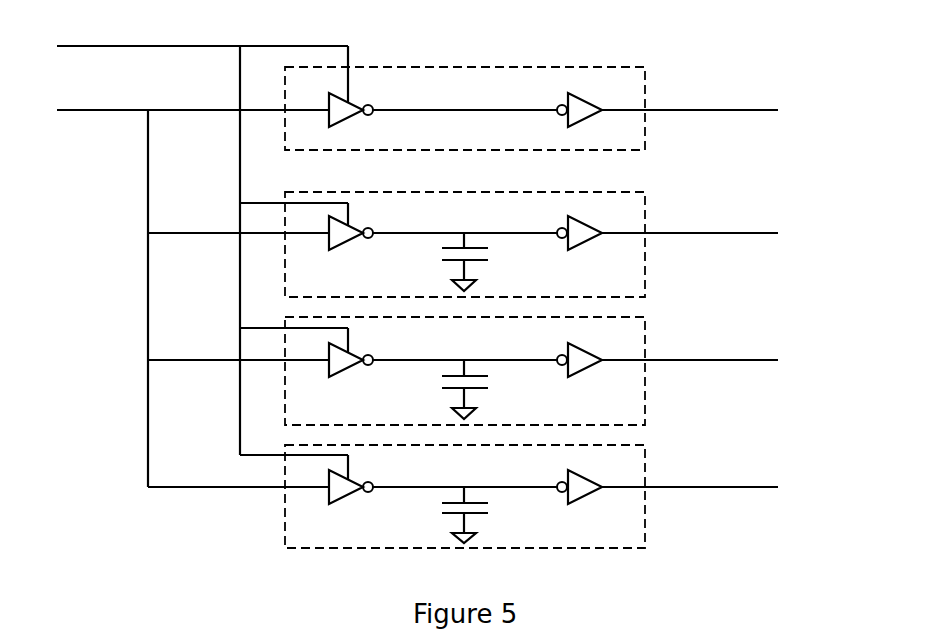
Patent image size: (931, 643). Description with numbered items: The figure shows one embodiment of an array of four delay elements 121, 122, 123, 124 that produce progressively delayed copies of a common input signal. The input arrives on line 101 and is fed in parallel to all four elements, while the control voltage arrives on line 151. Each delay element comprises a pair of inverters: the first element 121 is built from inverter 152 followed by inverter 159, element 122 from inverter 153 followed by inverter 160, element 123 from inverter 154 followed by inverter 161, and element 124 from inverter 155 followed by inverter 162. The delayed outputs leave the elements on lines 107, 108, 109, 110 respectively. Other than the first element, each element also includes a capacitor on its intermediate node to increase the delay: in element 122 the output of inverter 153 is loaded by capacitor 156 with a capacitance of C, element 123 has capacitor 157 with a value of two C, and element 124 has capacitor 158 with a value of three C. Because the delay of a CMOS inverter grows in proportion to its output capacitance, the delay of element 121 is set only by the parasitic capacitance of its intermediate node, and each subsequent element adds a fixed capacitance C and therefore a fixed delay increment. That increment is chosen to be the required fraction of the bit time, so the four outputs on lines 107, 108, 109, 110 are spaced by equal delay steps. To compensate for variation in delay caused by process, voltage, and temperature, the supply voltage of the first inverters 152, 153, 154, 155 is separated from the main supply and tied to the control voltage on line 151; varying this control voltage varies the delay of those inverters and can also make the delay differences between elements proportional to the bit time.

The line 151 is at (100, 60).
The input signal in 101 is at (88, 118).
The delay element 121 is at (487, 108).
The delay element 122 is at (487, 244).
The delay element 123 is at (487, 371).
The delay element 124 is at (487, 496).
The inverter 152 is at (352, 102).
The inverter 153 is at (352, 225).
The inverter 154 is at (352, 352).
The inverter 155 is at (352, 479).
The inverter 159 is at (580, 100).
The inverter 160 is at (580, 223).
The inverter 161 is at (580, 350).
The inverter 162 is at (580, 477).
The capacitor 156 is at (478, 262).
The capacitor 157 is at (480, 390).
The capacitor 158 is at (480, 516).
The output out1 107 is at (722, 118).
The output out2 108 is at (720, 241).
The output out3 109 is at (720, 368).
The output out4 110 is at (720, 495).